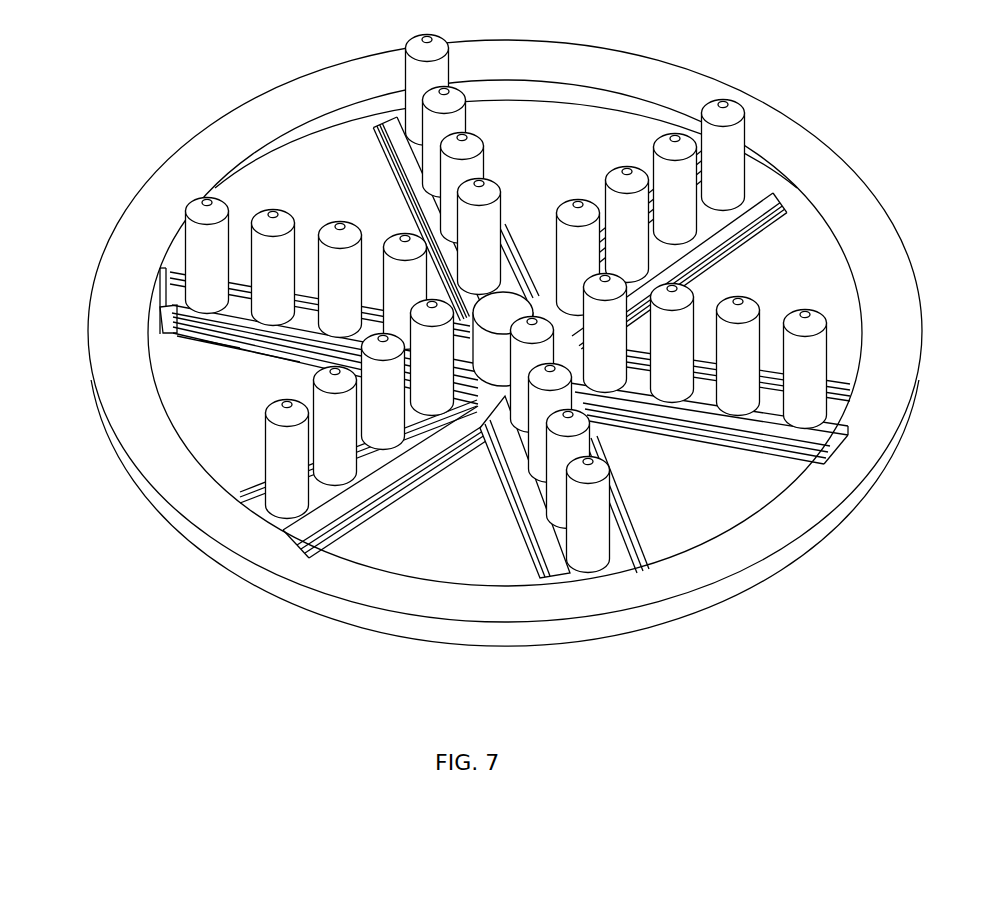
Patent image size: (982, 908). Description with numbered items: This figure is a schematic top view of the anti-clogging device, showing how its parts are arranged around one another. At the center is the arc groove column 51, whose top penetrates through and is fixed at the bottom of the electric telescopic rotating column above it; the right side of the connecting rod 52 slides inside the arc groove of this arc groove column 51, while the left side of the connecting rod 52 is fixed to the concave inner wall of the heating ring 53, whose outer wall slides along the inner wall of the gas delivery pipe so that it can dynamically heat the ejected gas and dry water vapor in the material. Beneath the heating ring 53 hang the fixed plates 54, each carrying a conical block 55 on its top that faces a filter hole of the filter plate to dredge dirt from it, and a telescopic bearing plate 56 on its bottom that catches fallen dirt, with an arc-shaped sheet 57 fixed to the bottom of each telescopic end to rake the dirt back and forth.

The arc groove column 51 is at (473, 322).
The connecting rod 52 is at (421, 490).
The heating ring 53 is at (443, 605).
The fixed plate 54 is at (172, 295).
The conical block 55 is at (200, 210).
The telescopic bearing plate 56 is at (160, 333).
The arc-shaped sheet 57 is at (222, 355).